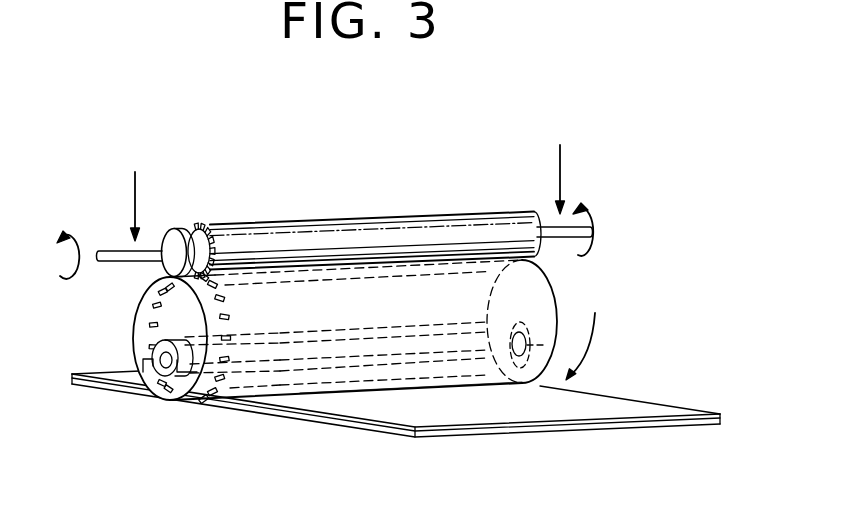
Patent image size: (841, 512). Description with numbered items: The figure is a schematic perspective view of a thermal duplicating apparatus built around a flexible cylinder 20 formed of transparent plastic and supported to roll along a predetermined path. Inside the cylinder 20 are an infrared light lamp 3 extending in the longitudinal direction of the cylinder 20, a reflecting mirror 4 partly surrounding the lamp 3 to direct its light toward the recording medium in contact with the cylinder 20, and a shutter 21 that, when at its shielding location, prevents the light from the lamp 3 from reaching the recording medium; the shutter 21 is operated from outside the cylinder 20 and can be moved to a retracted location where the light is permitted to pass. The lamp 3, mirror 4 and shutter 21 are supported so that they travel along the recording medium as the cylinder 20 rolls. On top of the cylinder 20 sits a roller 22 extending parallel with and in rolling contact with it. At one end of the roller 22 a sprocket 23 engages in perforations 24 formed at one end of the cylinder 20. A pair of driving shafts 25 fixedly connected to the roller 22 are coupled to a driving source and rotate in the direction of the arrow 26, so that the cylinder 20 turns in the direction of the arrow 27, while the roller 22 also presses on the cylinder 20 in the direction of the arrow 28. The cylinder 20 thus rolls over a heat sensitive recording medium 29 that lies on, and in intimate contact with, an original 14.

The infrared light lamp 3 is at (163, 367).
The reflecting mirror 4 is at (150, 365).
The original 14 is at (327, 424).
The flexible cylinder 20 is at (143, 297).
The shutter 21 is at (160, 378).
The roller 22 is at (350, 242).
The sprocket 23 is at (197, 220).
The perforations 24 is at (226, 302).
The driving shafts 25 is at (143, 250).
The arrow 26 is at (78, 233).
The arrow 27 is at (597, 347).
The arrow 28 is at (137, 182).
The heat sensitive recording medium 29 is at (282, 402).